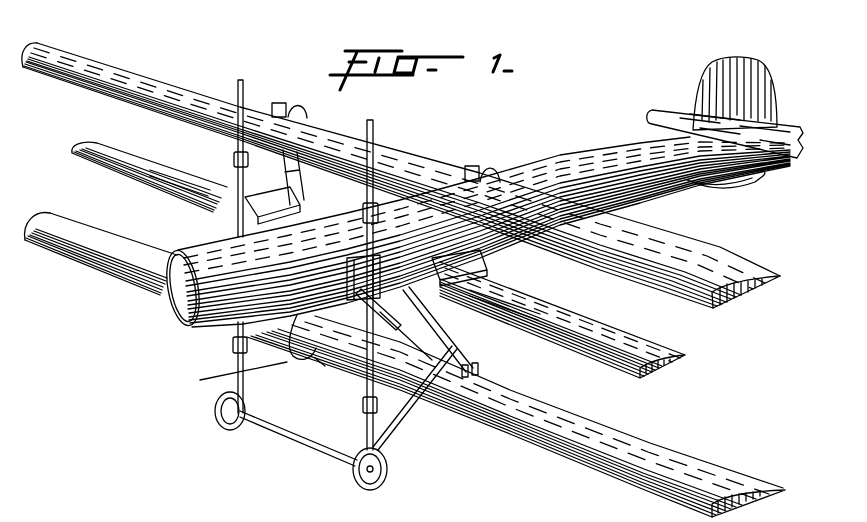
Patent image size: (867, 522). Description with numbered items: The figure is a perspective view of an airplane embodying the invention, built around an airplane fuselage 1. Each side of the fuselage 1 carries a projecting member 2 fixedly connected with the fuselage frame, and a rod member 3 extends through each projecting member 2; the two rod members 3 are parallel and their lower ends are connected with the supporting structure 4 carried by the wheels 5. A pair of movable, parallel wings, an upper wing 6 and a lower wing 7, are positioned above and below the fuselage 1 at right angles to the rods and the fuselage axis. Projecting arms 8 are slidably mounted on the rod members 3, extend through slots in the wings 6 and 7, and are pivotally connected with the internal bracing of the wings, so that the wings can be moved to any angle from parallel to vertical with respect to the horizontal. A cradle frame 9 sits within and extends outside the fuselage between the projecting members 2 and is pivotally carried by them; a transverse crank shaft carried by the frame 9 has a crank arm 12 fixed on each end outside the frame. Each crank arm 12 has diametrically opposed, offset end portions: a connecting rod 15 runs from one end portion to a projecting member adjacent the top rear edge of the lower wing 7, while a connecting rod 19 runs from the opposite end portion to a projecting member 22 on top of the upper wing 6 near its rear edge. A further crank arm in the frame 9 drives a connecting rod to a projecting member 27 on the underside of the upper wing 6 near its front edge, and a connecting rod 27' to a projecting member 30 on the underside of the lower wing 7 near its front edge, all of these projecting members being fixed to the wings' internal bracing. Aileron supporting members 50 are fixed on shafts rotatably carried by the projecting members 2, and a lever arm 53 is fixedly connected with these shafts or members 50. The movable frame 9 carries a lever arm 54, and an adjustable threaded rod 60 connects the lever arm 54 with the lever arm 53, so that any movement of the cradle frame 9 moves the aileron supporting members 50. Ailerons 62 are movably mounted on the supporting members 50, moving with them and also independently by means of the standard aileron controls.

The airplane fuselage 1 is at (560, 150).
The projecting member 2 is at (348, 312).
The rod member 3 is at (233, 380).
The supporting structure 4 is at (277, 430).
The wheel 5 is at (380, 483).
The upper wing 6 is at (720, 263).
The lower wing 7 is at (640, 447).
The projecting arm 8 is at (235, 160).
The cradle frame 9 is at (337, 315).
The crank arm 12 is at (257, 203).
The connecting rod 15 is at (455, 352).
The connecting rod 19 is at (293, 115).
The projecting member 22 is at (270, 105).
The projecting member 27 is at (305, 177).
The connecting rod 27' is at (282, 354).
The projecting member 30 is at (320, 363).
The aileron supporting member 50 is at (193, 190).
The lever arm 53 is at (385, 256).
The lever arm 54 is at (443, 330).
The rod 60 is at (361, 318).
The aileron 62 is at (107, 157).